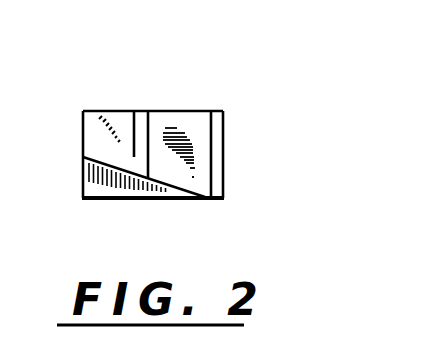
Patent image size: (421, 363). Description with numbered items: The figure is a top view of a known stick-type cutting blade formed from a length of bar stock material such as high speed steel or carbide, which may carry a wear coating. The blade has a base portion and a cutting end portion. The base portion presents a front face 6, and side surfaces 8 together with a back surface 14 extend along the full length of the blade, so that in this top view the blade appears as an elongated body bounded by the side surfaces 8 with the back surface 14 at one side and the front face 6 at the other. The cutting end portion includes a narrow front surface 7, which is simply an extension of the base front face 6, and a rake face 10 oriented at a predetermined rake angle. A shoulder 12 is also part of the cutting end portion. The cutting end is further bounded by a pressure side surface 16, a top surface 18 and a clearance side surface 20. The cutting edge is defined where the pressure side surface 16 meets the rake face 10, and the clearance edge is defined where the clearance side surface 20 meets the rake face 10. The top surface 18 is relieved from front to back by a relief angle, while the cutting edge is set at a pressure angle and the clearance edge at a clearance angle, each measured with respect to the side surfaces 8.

The front face 6 is at (133, 200).
The narrow front surface 7 is at (203, 199).
The side surfaces 8 is at (83, 142).
The rake face 10 is at (108, 168).
The shoulder 12 is at (219, 133).
The back surface 14 is at (115, 111).
The pressure side surface 16 is at (190, 120).
The top surface 18 is at (142, 130).
The clearance side surface 20 is at (97, 130).